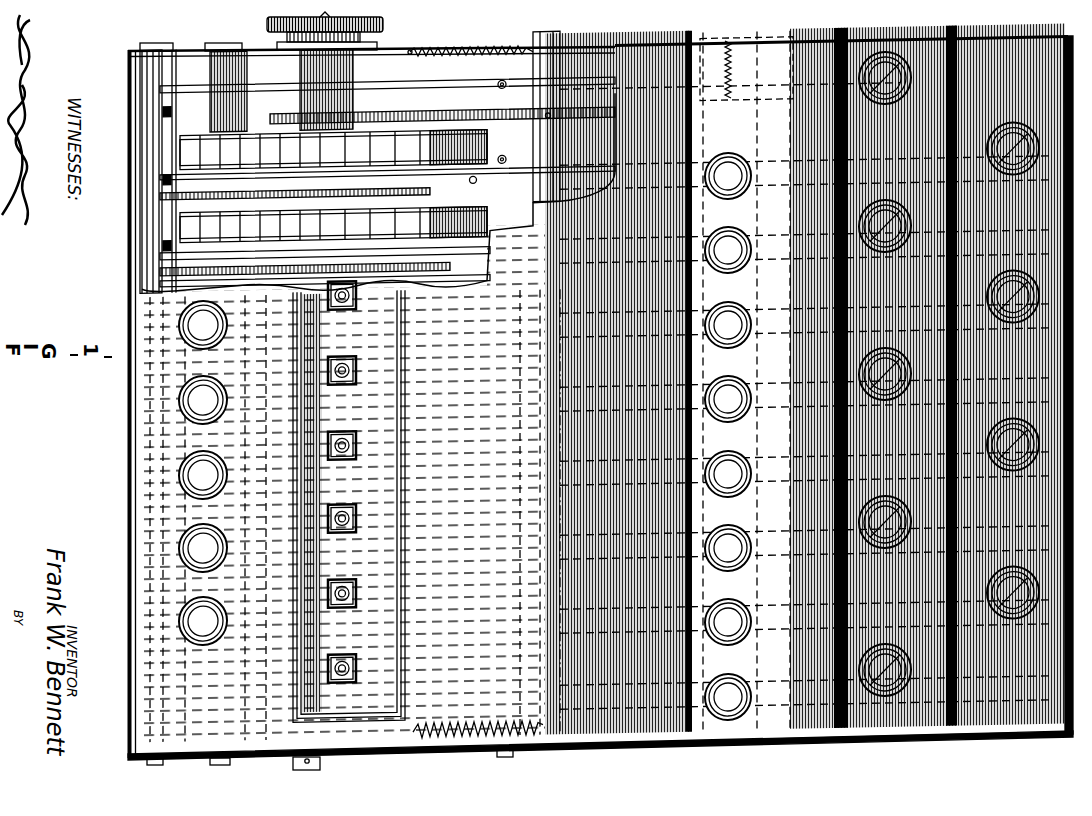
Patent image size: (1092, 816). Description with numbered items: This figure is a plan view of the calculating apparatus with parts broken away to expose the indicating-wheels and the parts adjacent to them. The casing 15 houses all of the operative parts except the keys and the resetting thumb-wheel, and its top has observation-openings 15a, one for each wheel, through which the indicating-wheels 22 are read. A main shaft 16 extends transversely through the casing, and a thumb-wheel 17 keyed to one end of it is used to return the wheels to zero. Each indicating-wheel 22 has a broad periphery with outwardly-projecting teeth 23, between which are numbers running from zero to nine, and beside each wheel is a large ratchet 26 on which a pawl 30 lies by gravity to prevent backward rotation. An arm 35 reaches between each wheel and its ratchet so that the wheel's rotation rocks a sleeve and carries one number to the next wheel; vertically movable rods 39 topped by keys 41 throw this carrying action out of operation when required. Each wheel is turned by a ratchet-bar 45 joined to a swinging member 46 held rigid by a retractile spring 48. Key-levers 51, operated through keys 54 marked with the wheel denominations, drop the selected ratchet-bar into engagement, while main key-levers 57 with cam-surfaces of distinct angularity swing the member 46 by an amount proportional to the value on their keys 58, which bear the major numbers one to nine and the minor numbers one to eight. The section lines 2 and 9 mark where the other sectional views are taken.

The section line 2 2 is at (1058, 178).
The section line 9 9 is at (396, 44).
The casing 15 is at (490, 47).
The observation-openings 15a is at (357, 597).
The main shaft 16 is at (321, 766).
The thumb-wheel 17 is at (383, 22).
The indicating-wheels 22 is at (474, 192).
The teeth 23 is at (482, 218).
The ratchet 26 is at (418, 200).
The pawl 30 is at (240, 140).
The arm 35 is at (131, 141).
The rods 39 is at (131, 116).
The keys 41 is at (190, 331).
The ratchet-bar 45 is at (396, 129).
The swinging member 46 is at (563, 140).
The retractile spring 48 is at (449, 66).
The key-levers 51 is at (534, 194).
The keys 54 is at (752, 200).
The main key-levers 57 is at (553, 173).
The keys 58 is at (1030, 157).